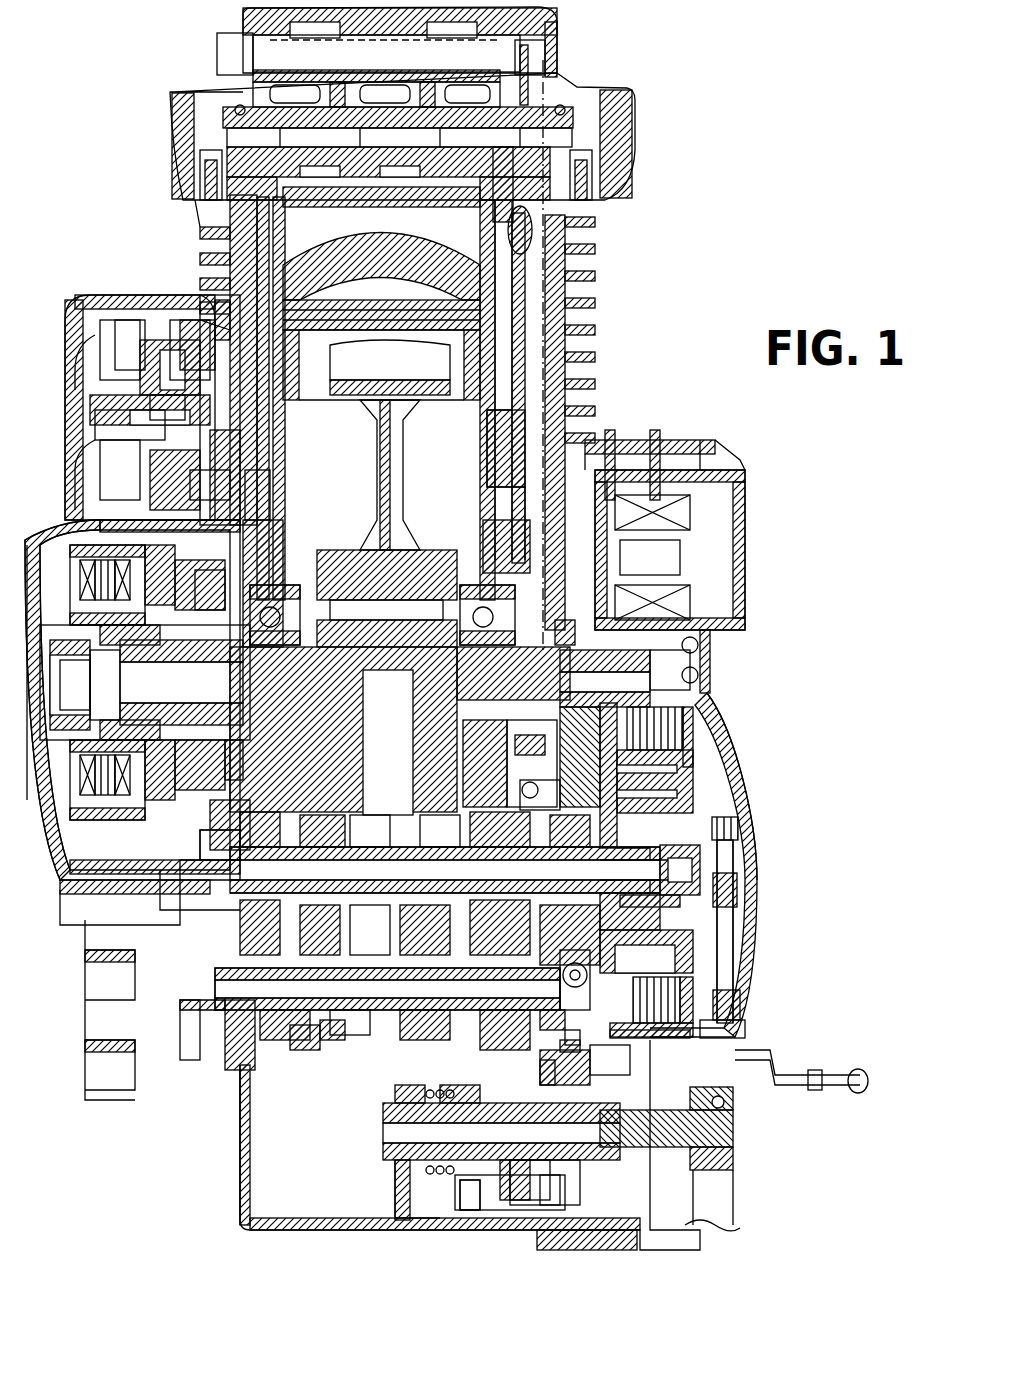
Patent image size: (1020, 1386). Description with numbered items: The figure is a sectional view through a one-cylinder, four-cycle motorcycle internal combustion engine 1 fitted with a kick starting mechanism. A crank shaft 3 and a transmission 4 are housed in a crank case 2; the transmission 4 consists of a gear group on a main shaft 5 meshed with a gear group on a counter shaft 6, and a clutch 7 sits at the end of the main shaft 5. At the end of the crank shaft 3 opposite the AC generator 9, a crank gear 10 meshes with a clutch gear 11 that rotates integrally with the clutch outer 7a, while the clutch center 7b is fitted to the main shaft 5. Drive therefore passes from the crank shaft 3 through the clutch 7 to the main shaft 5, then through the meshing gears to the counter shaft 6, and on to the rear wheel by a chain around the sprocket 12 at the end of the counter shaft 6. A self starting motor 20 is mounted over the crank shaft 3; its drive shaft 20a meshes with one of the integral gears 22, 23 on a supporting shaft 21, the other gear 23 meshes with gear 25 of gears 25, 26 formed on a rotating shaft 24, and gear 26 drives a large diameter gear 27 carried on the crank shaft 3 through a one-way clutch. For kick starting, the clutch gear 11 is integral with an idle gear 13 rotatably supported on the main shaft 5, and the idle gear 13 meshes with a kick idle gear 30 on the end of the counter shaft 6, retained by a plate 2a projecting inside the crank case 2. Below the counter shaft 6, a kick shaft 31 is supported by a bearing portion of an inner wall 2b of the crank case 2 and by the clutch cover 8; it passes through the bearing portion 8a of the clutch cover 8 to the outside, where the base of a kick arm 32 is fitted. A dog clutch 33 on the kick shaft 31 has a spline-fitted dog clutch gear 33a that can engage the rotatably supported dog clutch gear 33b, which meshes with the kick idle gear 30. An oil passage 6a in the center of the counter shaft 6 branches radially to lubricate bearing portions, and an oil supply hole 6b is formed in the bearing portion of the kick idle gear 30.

The internal combustion engine 1 is at (738, 152).
The crank case 2 is at (235, 1110).
The plate 2a is at (550, 1075).
The inner wall 2b is at (395, 1190).
The crank shaft 3 is at (655, 663).
The transmission 4 is at (355, 1075).
The main shaft 5 is at (730, 868).
The counter shaft 6 is at (305, 1050).
The oil passage 6a is at (330, 1040).
The oil supply hole 6b is at (600, 1051).
The clutch 7 is at (710, 757).
The clutch outer 7a is at (660, 1037).
The clutch center 7b is at (660, 905).
The clutch cover 8 is at (750, 885).
The bearing portion 8a is at (545, 1180).
The AC generator 9 is at (50, 540).
The crank gear 10 is at (565, 625).
The clutch gear 11 is at (580, 1040).
The sprocket 12 is at (180, 1065).
The idle gear 13 is at (530, 780).
The self starting motor 20 is at (215, 295).
The drive shaft 20a is at (185, 330).
The supporting shaft 21 is at (100, 425).
The gear 22 is at (120, 330).
The gear 23 is at (160, 395).
The rotating shaft 24 is at (215, 470).
The gear 25 is at (205, 580).
The gear 26 is at (260, 480).
The large diameter gear 27 is at (205, 845).
The kick idle gear 30 is at (560, 1050).
The kick shaft 31 is at (735, 1128).
The kick arm 32 is at (740, 1190).
The dog clutch 33 is at (430, 1262).
The dog clutch gear 33a is at (475, 1205).
The dog clutch gear 33b is at (545, 1210).